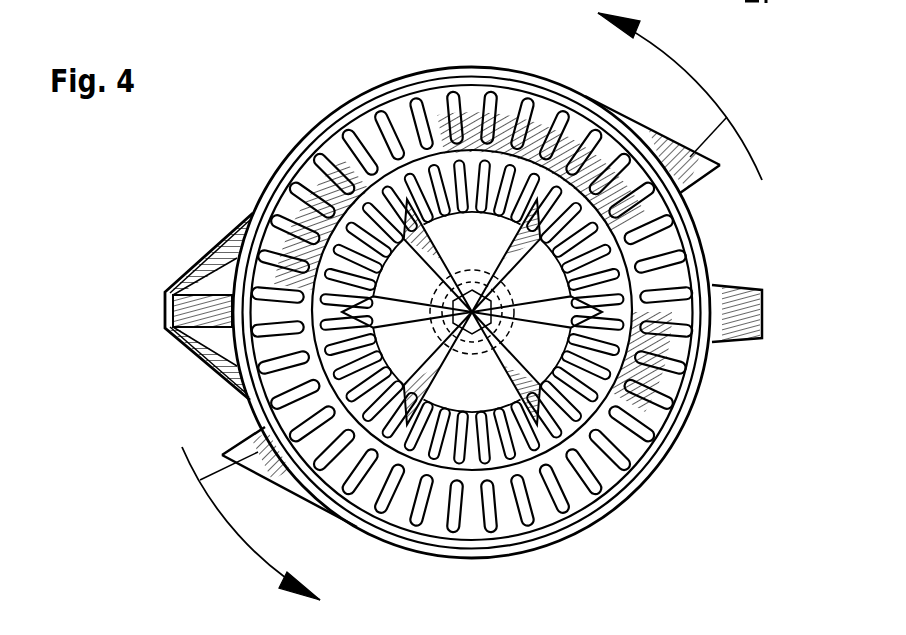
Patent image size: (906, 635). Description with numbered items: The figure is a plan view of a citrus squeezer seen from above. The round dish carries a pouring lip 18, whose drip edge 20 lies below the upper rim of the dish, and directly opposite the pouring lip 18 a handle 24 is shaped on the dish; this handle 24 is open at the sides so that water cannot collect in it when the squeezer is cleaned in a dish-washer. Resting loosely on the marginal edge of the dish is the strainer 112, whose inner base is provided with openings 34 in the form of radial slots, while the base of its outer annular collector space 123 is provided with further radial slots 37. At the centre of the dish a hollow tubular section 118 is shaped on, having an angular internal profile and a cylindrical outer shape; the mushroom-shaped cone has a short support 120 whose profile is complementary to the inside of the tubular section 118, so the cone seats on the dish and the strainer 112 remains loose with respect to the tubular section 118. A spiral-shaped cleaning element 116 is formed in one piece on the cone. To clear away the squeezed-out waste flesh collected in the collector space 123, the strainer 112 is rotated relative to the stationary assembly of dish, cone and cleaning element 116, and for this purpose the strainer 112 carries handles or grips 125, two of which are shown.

The pouring lip 18 is at (190, 273).
The drip edge 20 is at (166, 318).
The handle 24 is at (725, 327).
The openings 34 is at (445, 183).
The radial slots 37 is at (340, 130).
The strainer 112 is at (530, 153).
The cleaning element 116 is at (682, 403).
The hollow tubular section 118 is at (472, 300).
The short support 120 is at (455, 298).
The collector space 123 is at (472, 304).
The handles or grips 125 is at (695, 170).